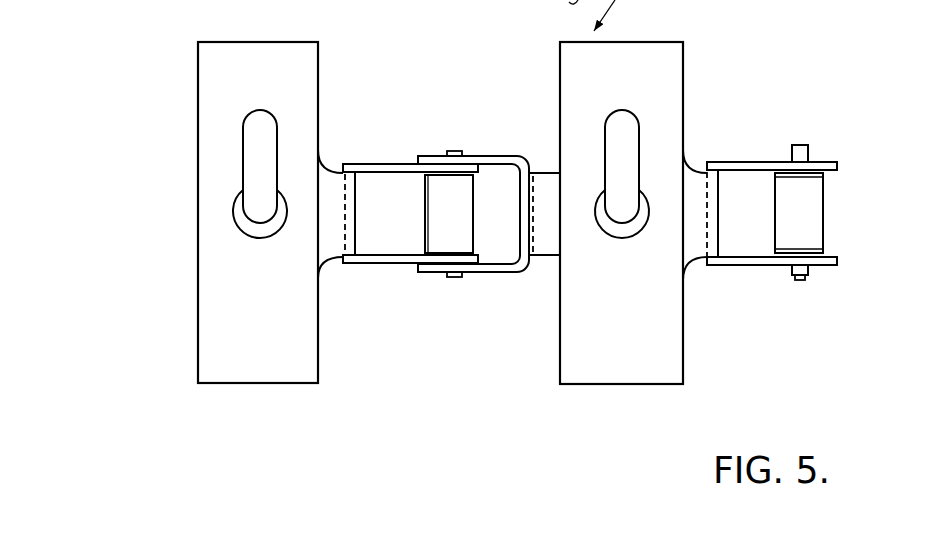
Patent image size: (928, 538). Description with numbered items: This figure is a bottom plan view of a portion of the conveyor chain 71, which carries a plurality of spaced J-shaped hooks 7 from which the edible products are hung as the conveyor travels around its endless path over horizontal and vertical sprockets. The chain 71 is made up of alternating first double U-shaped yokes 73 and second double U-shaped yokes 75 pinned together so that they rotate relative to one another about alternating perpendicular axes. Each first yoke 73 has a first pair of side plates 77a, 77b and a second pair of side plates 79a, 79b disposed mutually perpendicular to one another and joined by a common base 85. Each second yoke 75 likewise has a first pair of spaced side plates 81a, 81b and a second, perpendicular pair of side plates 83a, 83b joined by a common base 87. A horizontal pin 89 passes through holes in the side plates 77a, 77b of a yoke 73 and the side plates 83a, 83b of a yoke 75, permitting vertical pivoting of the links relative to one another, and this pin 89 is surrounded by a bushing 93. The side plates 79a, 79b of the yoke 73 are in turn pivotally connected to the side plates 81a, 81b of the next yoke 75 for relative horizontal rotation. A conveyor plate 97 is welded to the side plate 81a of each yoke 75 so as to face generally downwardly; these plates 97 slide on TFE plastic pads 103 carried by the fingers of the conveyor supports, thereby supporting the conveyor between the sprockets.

The J-shaped hook 7 is at (276, 121).
The conveyor plate 97 is at (228, 350).
The TFE plastic pad 103 is at (636, 194).
The second double U-shaped yoke 75 is at (399, 127).
The side plate 83a is at (419, 172).
The side plate 83b is at (366, 266).
The bushing 93 is at (452, 211).
The first double U-shaped yoke 73 is at (485, 216).
The side plate 77a is at (484, 156).
The side plate 77b is at (516, 275).
The common base 85 is at (508, 170).
The horizontal pin 89 is at (453, 150).
The chain 71 is at (818, 132).
The common base 87 is at (718, 192).
The side plate 81a is at (331, 240).
The side plate 81b is at (695, 232).
The side plate 79a is at (549, 226).
The side plate 79b is at (604, 270).